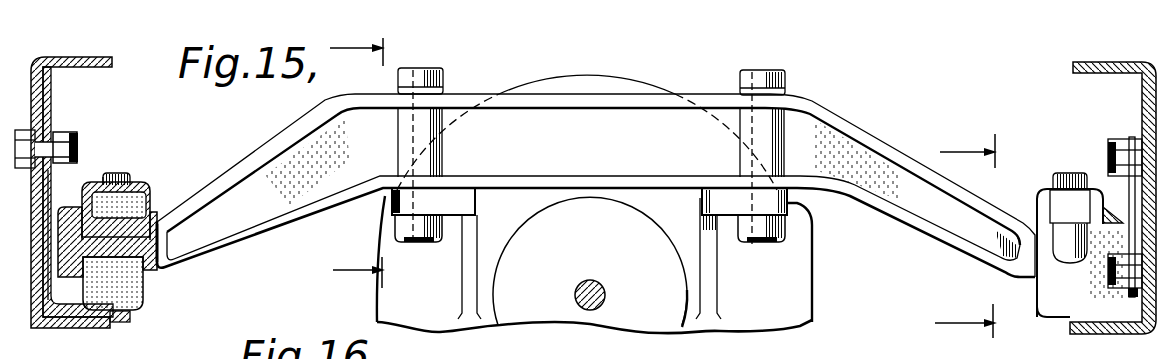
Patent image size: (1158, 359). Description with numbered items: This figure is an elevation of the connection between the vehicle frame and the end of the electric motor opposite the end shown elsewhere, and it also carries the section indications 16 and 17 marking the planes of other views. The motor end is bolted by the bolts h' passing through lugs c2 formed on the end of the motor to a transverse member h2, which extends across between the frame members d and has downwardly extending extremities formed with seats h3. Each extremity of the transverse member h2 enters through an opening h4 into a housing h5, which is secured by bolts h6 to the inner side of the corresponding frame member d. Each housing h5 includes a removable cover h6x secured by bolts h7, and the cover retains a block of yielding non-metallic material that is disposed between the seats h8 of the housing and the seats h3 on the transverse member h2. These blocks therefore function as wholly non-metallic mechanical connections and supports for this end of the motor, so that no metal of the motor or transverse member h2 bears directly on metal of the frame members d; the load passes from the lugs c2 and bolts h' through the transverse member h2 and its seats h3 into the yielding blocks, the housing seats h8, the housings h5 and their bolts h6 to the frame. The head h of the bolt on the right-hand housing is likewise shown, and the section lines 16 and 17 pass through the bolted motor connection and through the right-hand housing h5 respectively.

The frame members d is at (44, 102).
The clamp bolt h is at (781, 150).
The bolts h' is at (445, 147).
The transverse member h2 is at (596, 185).
The seats h3 is at (147, 192).
The openings h4 is at (156, 270).
The housing h5 is at (133, 313).
The bolts h6 is at (82, 142).
The removable cover h6x is at (140, 180).
The bolts h7 is at (122, 170).
The seats h8 is at (97, 180).
The lugs c2 is at (395, 208).
The section line 16 is at (378, 161).
The section line 17 is at (986, 236).